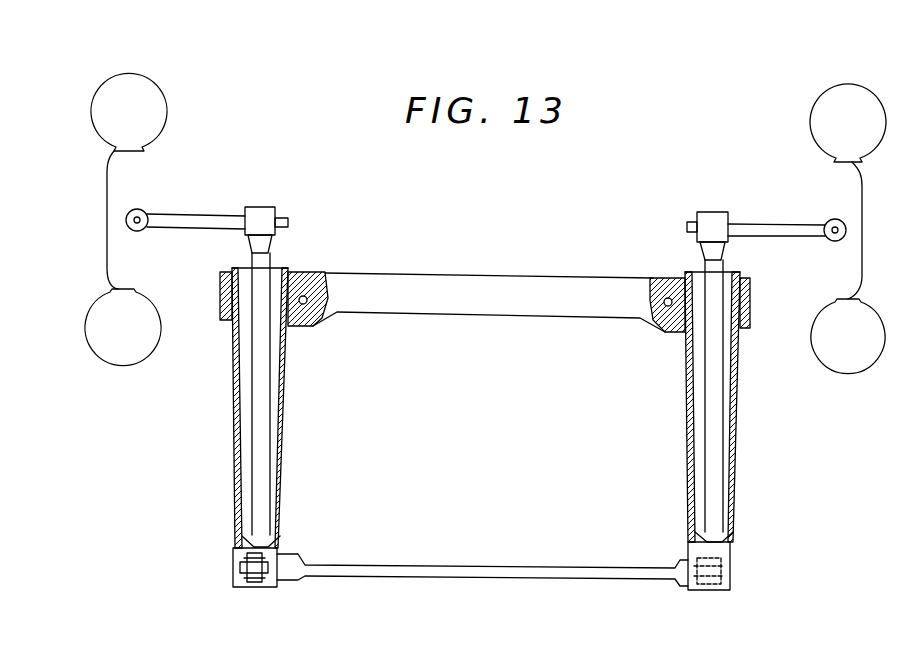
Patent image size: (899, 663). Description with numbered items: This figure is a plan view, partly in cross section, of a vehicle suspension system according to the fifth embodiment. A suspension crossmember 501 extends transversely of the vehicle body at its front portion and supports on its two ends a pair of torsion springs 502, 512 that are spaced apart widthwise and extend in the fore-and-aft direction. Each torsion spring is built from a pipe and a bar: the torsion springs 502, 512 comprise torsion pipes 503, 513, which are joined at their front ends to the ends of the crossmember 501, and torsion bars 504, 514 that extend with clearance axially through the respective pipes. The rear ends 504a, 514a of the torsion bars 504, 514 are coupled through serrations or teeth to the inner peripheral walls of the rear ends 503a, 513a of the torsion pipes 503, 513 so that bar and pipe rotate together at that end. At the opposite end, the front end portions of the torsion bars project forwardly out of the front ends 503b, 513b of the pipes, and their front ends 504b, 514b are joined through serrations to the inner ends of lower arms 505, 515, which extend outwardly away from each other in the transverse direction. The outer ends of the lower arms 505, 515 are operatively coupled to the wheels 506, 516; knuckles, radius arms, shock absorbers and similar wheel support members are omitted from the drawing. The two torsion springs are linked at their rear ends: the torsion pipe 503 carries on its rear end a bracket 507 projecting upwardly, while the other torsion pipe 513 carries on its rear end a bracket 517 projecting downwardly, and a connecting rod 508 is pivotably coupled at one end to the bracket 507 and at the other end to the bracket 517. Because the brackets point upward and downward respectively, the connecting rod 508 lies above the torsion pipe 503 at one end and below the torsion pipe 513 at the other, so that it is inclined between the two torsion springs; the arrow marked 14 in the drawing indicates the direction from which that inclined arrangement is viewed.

The suspension crossmember 501 is at (527, 288).
The torsion spring 502 is at (238, 423).
The torsion pipe 503 is at (233, 372).
The rear end of torsion pipe 503a is at (245, 566).
The front end of torsion pipe 503b is at (290, 270).
The torsion bar 504 is at (258, 390).
The rear end of torsion bar 504a is at (258, 541).
The front end of torsion bar 504b is at (265, 212).
The lower arm 505 is at (204, 222).
The wheel 506 is at (120, 348).
The bracket 507 is at (262, 586).
The connecting rod 508 is at (465, 577).
The torsion spring 512 is at (666, 441).
The torsion pipe 513 is at (688, 402).
The rear end of torsion pipe 513a is at (730, 553).
The front end of torsion pipe 513b is at (745, 273).
The torsion bar 514 is at (715, 404).
The rear end of torsion bar 514a is at (712, 536).
The front end of torsion bar 514b is at (712, 218).
The lower arm 515 is at (783, 230).
The wheel 516 is at (848, 360).
The bracket 517 is at (723, 572).
The section view direction arrow 14 is at (345, 590).